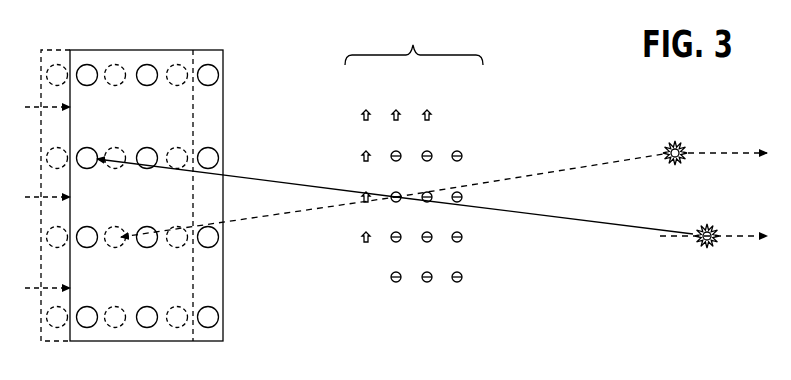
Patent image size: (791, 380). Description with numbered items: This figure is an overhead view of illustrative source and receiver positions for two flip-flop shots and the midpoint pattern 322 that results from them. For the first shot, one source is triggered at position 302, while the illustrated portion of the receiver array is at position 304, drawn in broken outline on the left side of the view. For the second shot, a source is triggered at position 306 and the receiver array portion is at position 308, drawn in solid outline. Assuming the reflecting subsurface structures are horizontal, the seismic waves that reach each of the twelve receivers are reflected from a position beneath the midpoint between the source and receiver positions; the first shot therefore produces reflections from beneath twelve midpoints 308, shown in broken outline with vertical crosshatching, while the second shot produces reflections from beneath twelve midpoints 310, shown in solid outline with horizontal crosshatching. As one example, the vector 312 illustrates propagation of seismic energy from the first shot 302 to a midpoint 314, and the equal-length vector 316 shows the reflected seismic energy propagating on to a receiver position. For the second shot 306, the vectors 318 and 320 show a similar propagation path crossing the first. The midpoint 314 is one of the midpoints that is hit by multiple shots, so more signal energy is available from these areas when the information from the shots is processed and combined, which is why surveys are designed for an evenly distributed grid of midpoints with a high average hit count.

The source position for first shot 302 is at (683, 160).
The receiver array position for first shot 304 is at (193, 60).
The source position for second shot 306 is at (715, 244).
The receiver array position for second shot 308 is at (224, 57).
The midpoints from second shot 310 is at (462, 153).
The propagation vector from first shot to midpoint 312 is at (594, 165).
The midpoint hit by multiple shots 314 is at (400, 193).
The reflected energy vector to receiver 316 is at (307, 210).
The second shot propagation vector 318 is at (590, 222).
The second shot reflected energy vector 320 is at (276, 181).
The midpoint pattern 322 is at (414, 148).